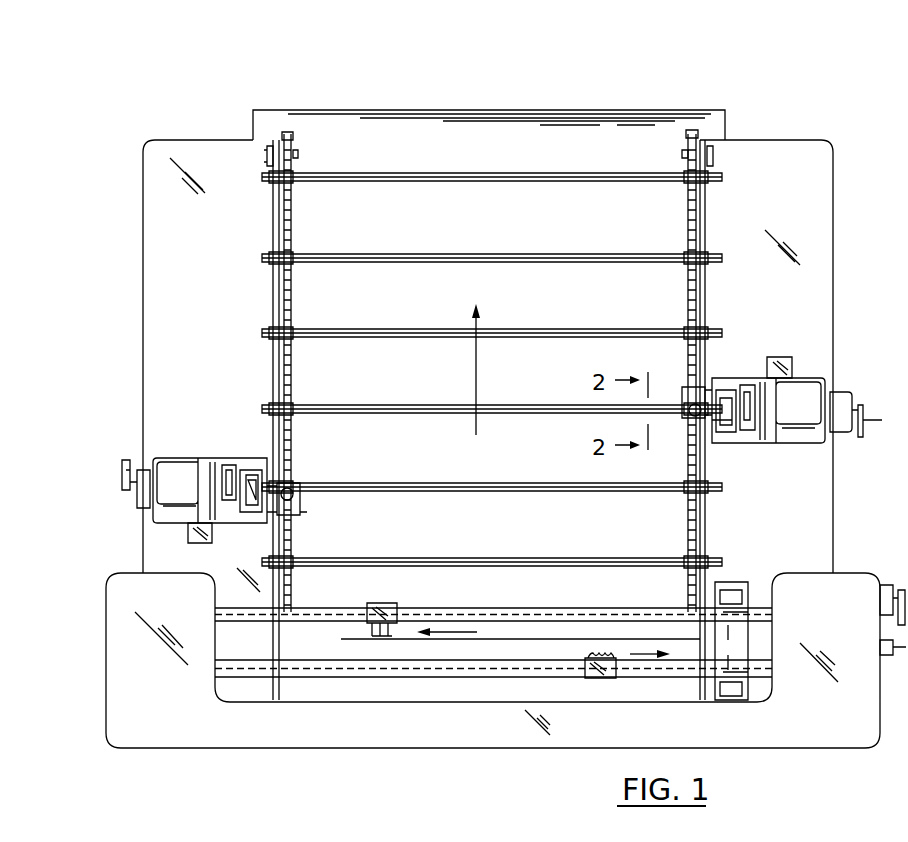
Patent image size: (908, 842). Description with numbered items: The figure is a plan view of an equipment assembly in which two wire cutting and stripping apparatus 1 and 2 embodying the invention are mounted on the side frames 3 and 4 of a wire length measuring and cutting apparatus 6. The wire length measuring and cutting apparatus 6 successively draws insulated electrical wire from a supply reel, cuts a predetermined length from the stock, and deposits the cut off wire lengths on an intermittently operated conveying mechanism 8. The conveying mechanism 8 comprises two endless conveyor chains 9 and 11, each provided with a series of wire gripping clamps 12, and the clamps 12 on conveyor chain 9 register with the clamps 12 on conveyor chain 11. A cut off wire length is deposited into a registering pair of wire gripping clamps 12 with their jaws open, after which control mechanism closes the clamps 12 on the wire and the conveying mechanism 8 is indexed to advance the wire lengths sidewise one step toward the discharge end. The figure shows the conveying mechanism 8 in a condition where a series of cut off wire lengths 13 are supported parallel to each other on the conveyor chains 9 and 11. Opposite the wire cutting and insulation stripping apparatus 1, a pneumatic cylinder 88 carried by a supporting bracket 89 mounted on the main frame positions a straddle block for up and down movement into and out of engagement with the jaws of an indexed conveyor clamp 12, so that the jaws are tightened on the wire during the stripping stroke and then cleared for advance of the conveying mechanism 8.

The wire cutting and stripping apparatus 1 is at (806, 388).
The wire cutting and stripping apparatus 2 is at (180, 466).
The side frame 3 is at (833, 196).
The side frame 4 is at (143, 278).
The wire length measuring and cutting apparatus 6 is at (280, 740).
The conveying mechanism 8 is at (545, 152).
The conveyor chain 9 is at (688, 224).
The conveyor chain 11 is at (291, 246).
The wire gripping clamps 12 is at (291, 330).
The cut off wire lengths 13 is at (463, 212).
The pneumatic cylinder 88 is at (690, 419).
The supporting bracket 89 is at (688, 389).